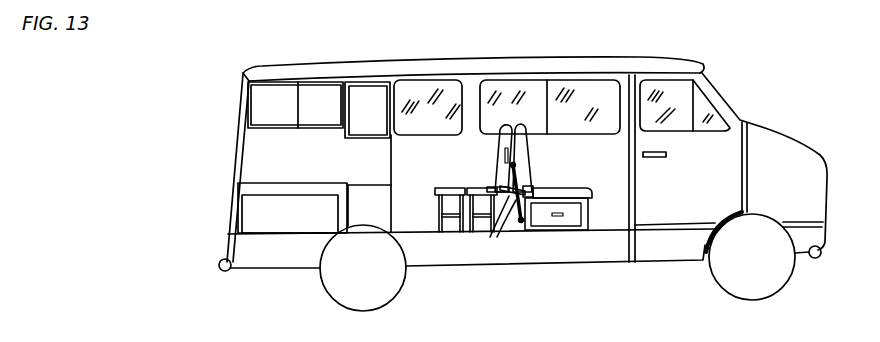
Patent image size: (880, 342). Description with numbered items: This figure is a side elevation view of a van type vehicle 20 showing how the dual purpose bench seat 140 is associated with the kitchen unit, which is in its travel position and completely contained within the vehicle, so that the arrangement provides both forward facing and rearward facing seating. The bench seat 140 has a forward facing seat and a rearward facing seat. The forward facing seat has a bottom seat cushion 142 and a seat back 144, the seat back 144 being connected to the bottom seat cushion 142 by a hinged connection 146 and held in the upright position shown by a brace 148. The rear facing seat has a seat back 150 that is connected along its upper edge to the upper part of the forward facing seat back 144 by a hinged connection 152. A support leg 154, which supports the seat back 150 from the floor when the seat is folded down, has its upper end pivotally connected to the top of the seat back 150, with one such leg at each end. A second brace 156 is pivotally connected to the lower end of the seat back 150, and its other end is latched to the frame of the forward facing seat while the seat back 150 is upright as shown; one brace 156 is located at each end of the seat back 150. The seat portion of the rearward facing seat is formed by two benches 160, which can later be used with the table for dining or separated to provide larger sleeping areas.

The van type vehicle 20 is at (524, 54).
The dual purpose bench seat 140 is at (562, 168).
The bottom seat cushion 142 is at (579, 186).
The seat back 144 is at (524, 157).
The hinged connection 146 is at (533, 187).
The brace 148 is at (514, 217).
The seat back 150 is at (498, 168).
The hinged connection 152 is at (503, 127).
The support leg 154 is at (498, 148).
The second brace 156 is at (502, 223).
The benches 160 is at (466, 188).